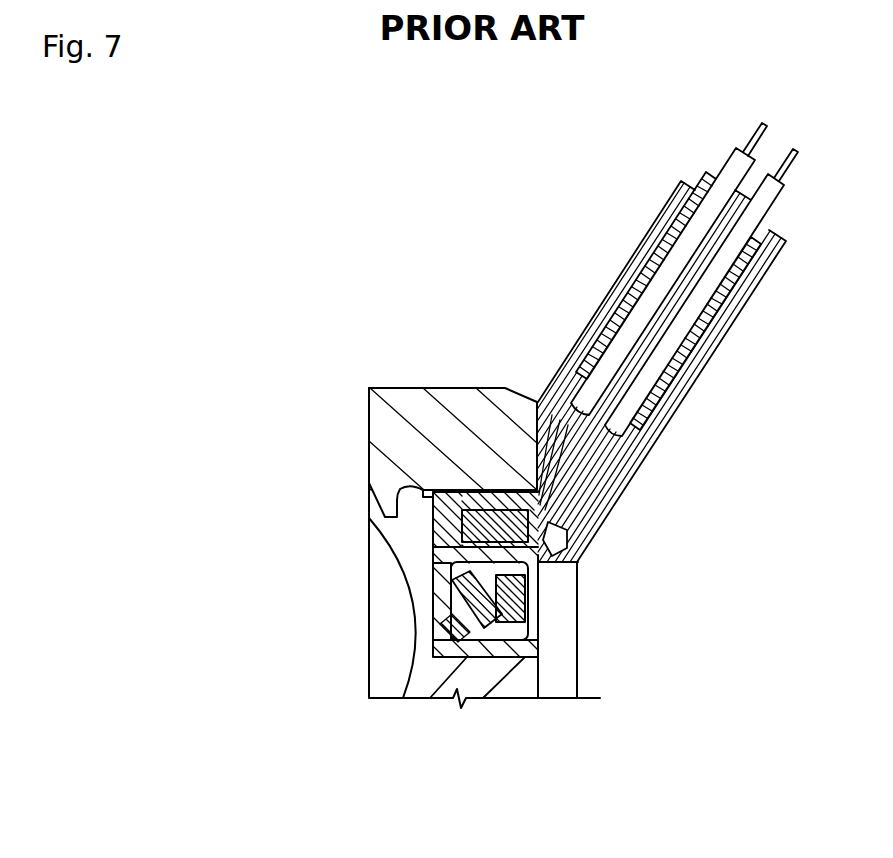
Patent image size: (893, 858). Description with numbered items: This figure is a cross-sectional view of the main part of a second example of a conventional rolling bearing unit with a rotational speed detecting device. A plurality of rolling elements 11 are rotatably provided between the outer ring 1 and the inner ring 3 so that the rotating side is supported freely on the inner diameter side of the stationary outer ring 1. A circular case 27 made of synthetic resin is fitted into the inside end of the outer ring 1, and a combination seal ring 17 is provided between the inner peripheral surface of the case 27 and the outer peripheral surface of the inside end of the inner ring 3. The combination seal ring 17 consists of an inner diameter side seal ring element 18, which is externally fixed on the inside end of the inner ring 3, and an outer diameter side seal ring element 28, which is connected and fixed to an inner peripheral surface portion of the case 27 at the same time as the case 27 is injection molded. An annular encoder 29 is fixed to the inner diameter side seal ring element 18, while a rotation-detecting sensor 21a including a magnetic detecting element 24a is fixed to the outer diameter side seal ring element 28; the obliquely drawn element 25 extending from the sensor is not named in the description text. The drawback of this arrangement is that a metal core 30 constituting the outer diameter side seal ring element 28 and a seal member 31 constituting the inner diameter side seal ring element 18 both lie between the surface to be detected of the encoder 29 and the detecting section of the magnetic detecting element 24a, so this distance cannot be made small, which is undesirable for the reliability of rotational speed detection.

The outer ring 1 is at (404, 412).
The inner ring 3 is at (482, 683).
The rolling elements 11 is at (388, 600).
The combination seal ring 17 is at (495, 576).
The inner diameter side seal ring element 18 is at (537, 642).
The rotation-detecting sensor 21a is at (423, 487).
The magnetic detecting element 24a is at (633, 473).
The cable 25 is at (640, 318).
The case 27 is at (488, 505).
The outer diameter side seal ring element 28 is at (437, 600).
The encoder 29 is at (535, 620).
The metal core 30 is at (520, 565).
The seal member 31 is at (530, 600).